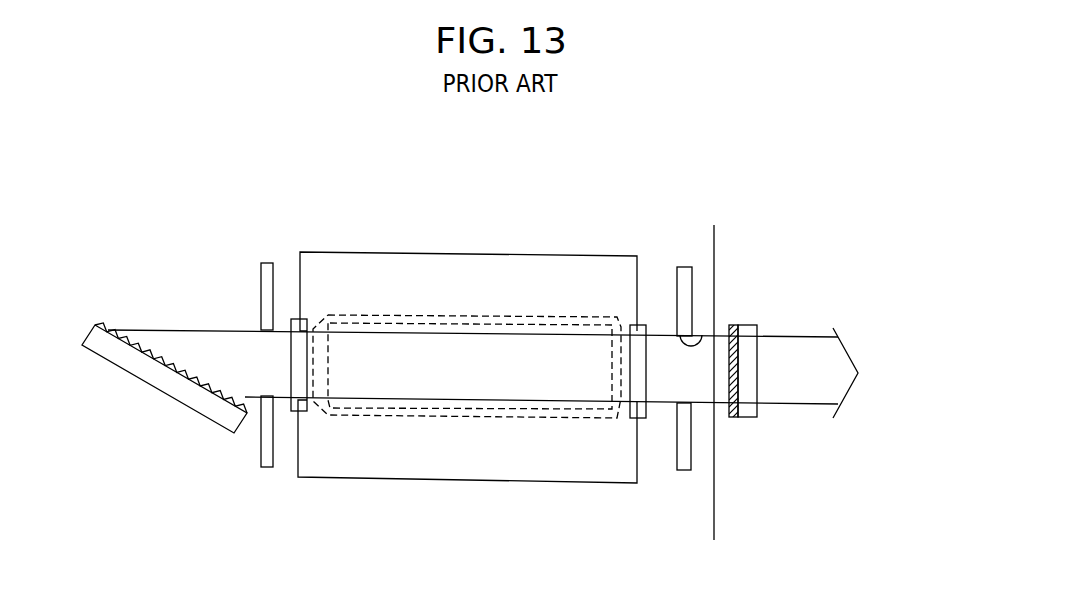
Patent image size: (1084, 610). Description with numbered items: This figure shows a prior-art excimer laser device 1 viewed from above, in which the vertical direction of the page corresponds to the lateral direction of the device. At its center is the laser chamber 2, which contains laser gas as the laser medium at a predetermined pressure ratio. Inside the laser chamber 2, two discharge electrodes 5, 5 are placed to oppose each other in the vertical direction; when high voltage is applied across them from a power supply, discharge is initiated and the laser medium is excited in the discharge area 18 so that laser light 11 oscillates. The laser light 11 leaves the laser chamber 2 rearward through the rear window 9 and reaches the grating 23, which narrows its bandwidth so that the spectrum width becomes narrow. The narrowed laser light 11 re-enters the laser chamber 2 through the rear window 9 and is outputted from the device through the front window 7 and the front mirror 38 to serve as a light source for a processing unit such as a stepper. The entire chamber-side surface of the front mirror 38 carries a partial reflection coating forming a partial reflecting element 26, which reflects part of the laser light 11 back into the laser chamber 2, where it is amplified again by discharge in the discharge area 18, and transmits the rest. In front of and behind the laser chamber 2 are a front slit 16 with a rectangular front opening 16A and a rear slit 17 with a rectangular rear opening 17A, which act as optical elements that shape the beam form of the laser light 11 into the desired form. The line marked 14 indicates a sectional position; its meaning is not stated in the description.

The excimer laser device 1 is at (818, 186).
The laser chamber 2 is at (536, 254).
The discharge electrodes 5 is at (420, 315).
The front window 7 is at (645, 324).
The rear window 9 is at (290, 318).
The laser light 11 is at (147, 333).
The section line 14 is at (716, 246).
The front slit 16 is at (683, 266).
The front opening 16A is at (703, 335).
The rear slit 17 is at (264, 262).
The rear opening 17A is at (270, 334).
The discharge area 18 is at (450, 418).
The grating 23 is at (158, 390).
The partial reflecting element 26 is at (728, 392).
The front mirror 38 is at (743, 324).